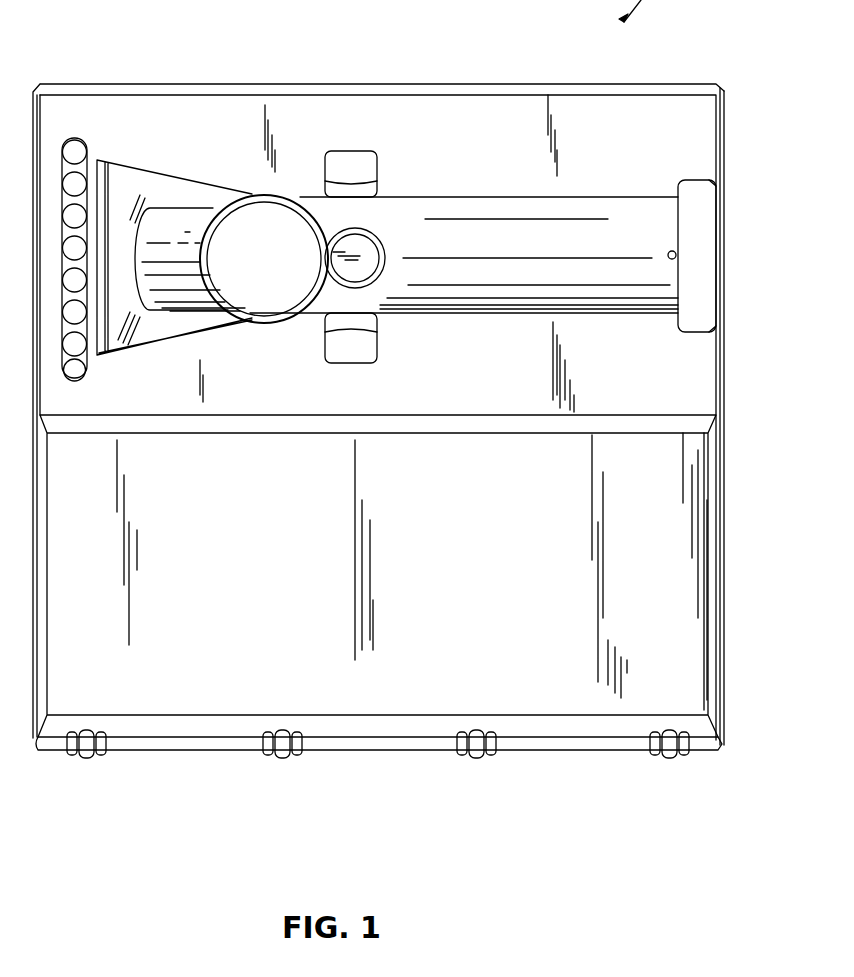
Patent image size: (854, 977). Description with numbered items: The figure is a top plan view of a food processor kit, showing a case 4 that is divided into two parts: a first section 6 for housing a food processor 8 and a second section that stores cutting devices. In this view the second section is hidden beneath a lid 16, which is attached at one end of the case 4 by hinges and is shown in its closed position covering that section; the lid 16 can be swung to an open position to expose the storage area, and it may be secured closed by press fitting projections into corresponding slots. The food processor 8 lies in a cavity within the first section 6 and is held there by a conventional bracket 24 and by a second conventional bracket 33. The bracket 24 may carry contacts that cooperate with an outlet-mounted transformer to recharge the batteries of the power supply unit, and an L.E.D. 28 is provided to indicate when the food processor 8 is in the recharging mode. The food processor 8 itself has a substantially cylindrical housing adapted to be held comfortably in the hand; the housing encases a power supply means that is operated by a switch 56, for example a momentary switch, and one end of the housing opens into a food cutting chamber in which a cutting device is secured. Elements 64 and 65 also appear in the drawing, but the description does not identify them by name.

The case 4 is at (725, 92).
The first section 6 is at (493, 106).
The food processor 8 is at (218, 178).
The lid 16 is at (725, 648).
The bracket 24 is at (716, 185).
The L.E.D. 28 is at (676, 255).
The bracket 33 is at (377, 185).
The switch 56 is at (368, 250).
The cylinder 64 is at (186, 308).
The roller 65 is at (72, 142).